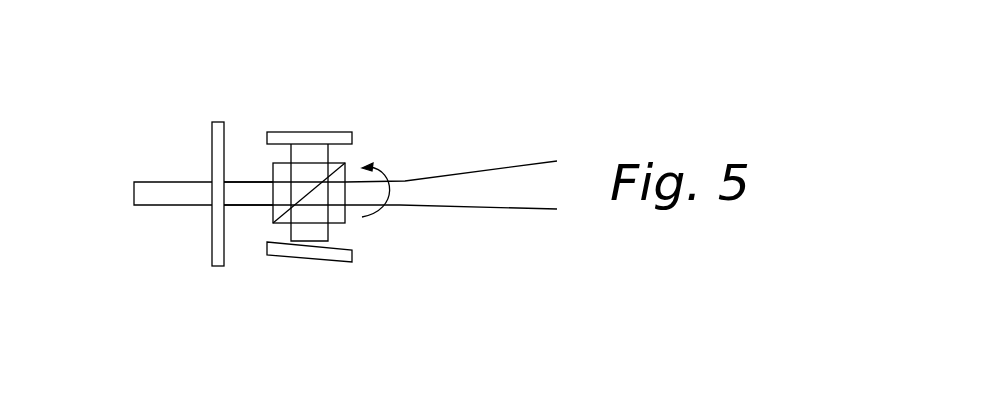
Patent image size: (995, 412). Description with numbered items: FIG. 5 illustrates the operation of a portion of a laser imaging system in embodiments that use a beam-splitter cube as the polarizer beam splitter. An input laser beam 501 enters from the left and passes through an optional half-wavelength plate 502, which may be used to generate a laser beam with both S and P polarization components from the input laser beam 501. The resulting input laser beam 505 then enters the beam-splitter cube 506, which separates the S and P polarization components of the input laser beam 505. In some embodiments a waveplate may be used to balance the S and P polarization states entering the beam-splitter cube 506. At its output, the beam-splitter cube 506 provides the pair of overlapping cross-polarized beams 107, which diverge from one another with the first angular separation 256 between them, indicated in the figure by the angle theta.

The input laser beam 501 is at (182, 182).
The half-wavelength plate 502 is at (213, 121).
The input laser beam 505 is at (243, 182).
The beam-splitter cube 506 is at (324, 68).
The pair of overlapping cross-polarized beams 107 is at (409, 181).
The first angular separation 256 is at (377, 232).